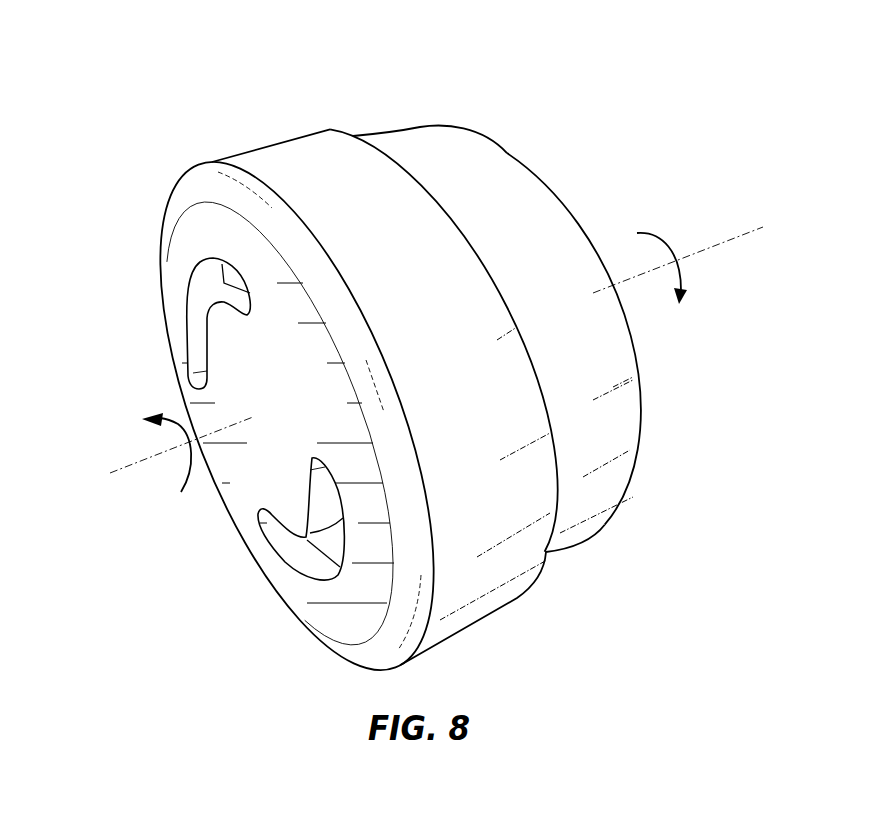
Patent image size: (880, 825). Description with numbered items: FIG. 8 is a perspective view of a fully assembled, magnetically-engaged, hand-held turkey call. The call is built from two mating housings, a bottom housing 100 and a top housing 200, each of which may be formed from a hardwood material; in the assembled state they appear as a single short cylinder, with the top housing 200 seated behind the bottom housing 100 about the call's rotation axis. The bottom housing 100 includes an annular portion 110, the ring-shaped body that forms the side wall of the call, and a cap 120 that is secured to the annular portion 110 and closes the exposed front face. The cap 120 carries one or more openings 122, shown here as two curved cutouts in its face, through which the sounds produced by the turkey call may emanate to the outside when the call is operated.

The bottom housing 100 is at (183, 91).
The annular portion 110 is at (348, 150).
The cap 120 is at (180, 190).
The openings 122 is at (228, 287).
The top housing 200 is at (637, 588).